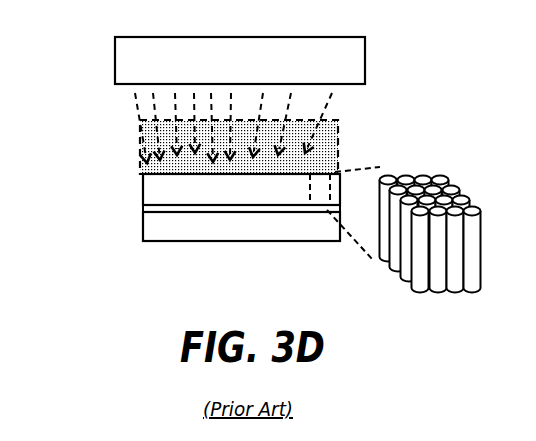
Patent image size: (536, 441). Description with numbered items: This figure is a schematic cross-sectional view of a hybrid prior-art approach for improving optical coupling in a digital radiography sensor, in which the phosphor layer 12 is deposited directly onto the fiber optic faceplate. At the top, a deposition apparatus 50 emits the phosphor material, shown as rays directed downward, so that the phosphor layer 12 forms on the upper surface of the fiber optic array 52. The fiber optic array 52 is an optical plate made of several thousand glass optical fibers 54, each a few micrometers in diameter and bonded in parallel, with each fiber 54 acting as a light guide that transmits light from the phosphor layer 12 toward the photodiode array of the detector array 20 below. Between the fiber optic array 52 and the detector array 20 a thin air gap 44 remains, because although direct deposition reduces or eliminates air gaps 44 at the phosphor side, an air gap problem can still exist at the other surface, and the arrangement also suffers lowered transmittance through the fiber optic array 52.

The deposition apparatus 50 is at (113, 45).
The phosphor layer 12 is at (141, 168).
The fiber optic array 52 is at (142, 193).
The air gaps 44 is at (143, 207).
The detector array 20 is at (213, 240).
The optical fibers 54 is at (437, 292).